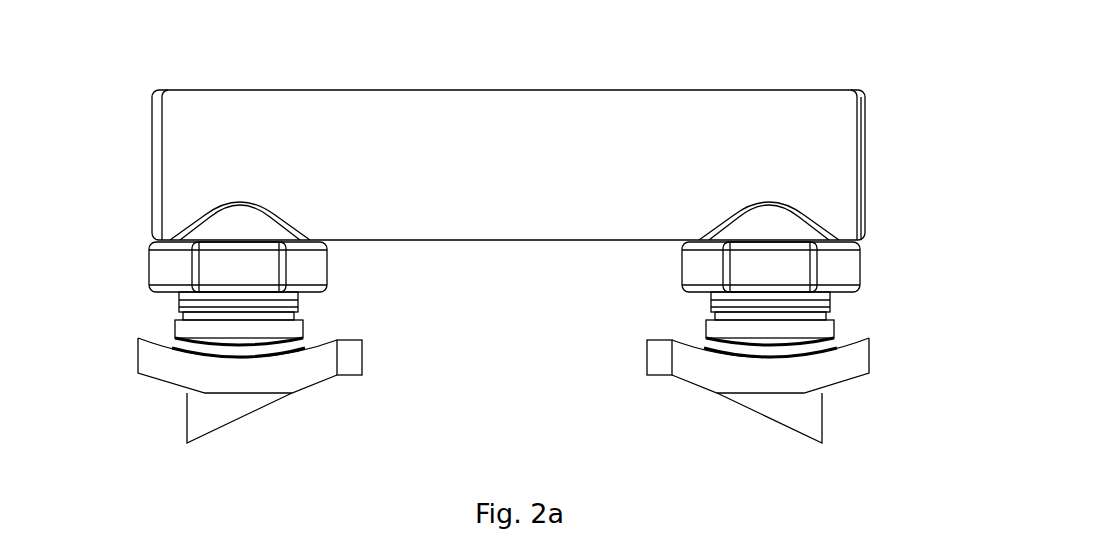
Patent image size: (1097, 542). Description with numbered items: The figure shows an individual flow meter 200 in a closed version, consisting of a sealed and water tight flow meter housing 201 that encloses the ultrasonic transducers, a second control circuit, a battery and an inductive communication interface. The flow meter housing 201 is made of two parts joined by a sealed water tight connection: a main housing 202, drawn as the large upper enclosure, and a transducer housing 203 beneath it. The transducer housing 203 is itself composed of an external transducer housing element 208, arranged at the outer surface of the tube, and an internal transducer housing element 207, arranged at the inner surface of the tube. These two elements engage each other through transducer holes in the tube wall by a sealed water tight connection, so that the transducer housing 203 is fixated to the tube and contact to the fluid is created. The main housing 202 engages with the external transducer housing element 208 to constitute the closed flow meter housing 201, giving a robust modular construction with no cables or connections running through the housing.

The flow meter 200 is at (506, 235).
The flow meter housing 201 is at (875, 78).
The main housing 202 is at (135, 83).
The transducer housing 203 is at (135, 262).
The internal transducer housing element 207 is at (313, 360).
The external transducer housing element 208 is at (275, 305).